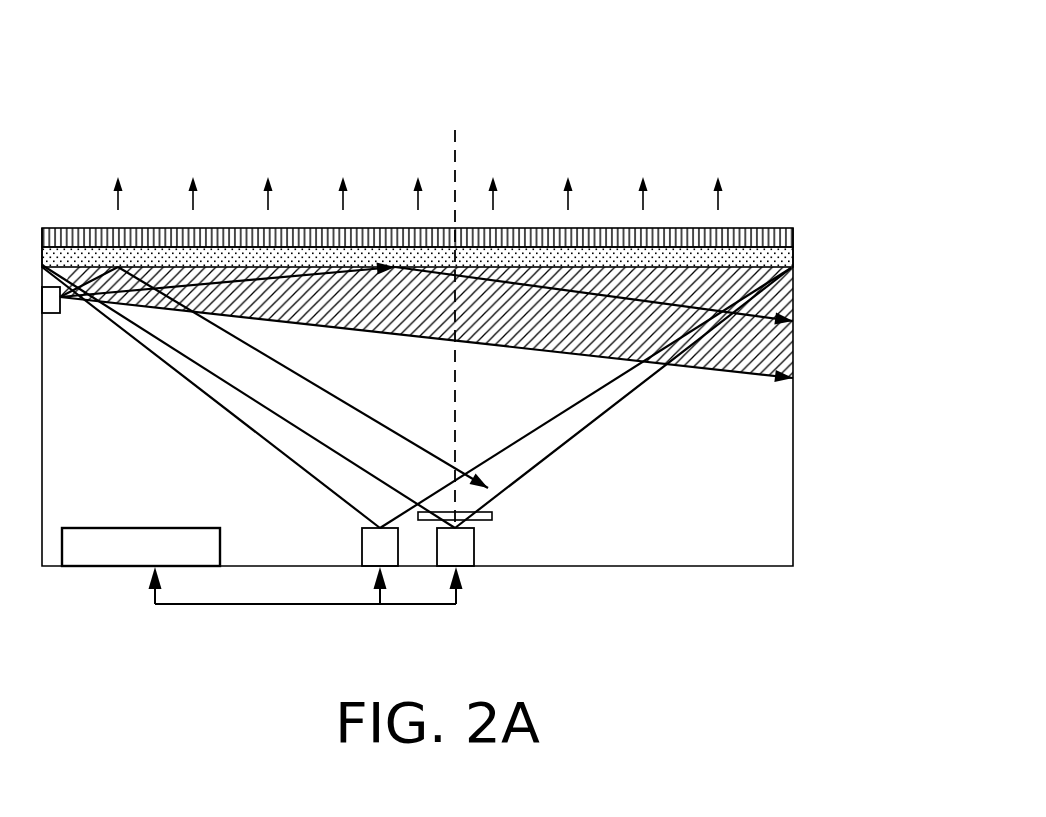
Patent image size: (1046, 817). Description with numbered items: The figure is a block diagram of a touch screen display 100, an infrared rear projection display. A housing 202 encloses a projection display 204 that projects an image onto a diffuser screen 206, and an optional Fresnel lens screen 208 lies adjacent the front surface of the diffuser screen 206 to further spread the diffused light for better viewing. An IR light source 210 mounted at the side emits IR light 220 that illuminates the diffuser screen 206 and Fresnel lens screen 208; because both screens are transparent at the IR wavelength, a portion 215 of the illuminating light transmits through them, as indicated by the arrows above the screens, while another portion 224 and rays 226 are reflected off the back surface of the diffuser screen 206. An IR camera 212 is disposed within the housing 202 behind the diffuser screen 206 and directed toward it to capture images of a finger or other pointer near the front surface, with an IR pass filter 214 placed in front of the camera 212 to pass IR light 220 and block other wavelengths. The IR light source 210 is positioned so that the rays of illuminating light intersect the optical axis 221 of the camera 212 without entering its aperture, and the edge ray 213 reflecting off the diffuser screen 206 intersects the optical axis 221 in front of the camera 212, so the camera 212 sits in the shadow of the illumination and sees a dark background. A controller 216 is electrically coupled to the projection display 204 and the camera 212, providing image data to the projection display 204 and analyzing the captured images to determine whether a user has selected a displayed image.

The touch screen display 100 is at (140, 68).
The housing 202 is at (793, 522).
The projection display 204 is at (361, 552).
The diffuser screen 206 is at (793, 267).
The Fresnel lens screen 208 is at (793, 228).
The IR light source 210 is at (60, 315).
The IR camera 212 is at (474, 552).
The edge ray 213 is at (323, 387).
The IR pass filter 214 is at (493, 513).
The portion of illuminating IR light 215 is at (718, 201).
The controller 216 is at (120, 527).
The IR light 220 is at (520, 348).
The optical axis 221 is at (456, 435).
The reflected portion of IR light 224 is at (253, 278).
The reflected rays 226 is at (493, 280).